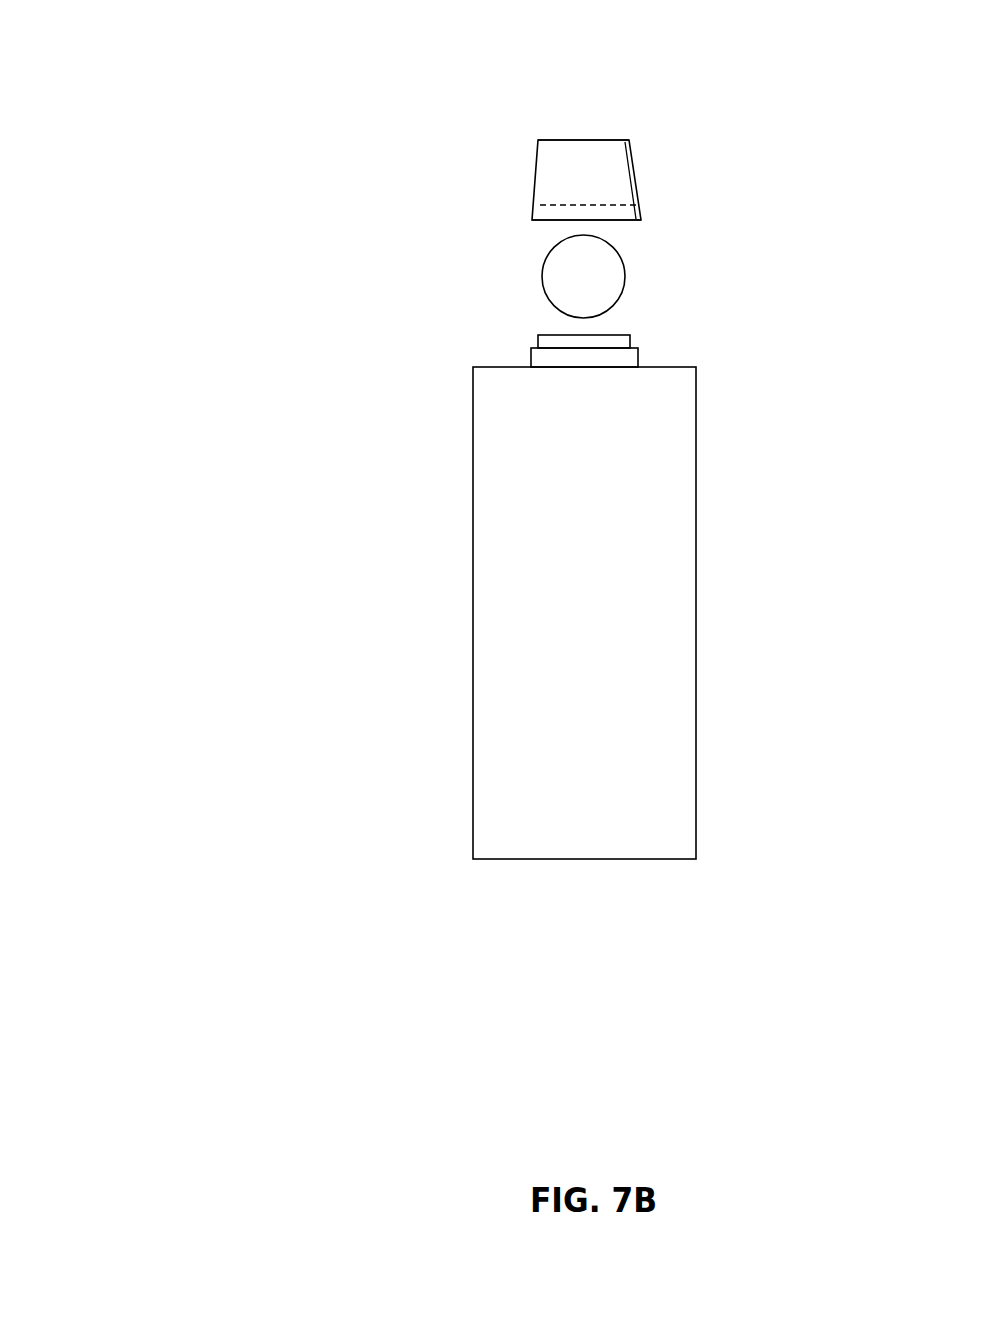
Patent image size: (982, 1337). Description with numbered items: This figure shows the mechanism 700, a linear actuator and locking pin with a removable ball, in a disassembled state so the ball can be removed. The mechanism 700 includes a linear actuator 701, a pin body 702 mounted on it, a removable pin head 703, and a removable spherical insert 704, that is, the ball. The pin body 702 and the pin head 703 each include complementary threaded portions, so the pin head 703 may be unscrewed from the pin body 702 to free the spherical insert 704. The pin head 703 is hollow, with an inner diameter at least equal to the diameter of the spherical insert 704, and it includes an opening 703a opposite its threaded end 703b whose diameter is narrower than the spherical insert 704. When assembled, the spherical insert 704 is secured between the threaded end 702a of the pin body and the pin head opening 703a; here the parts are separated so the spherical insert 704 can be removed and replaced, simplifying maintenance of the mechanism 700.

The mechanism 700 is at (174, 66).
The linear actuator 701 is at (523, 702).
The pin body 702 is at (547, 356).
The threaded end of the pin body 702a is at (620, 337).
The removable pin head 703 is at (565, 177).
The opening 703a is at (585, 138).
The threaded end 703b is at (567, 213).
The removable spherical insert 704 is at (585, 248).